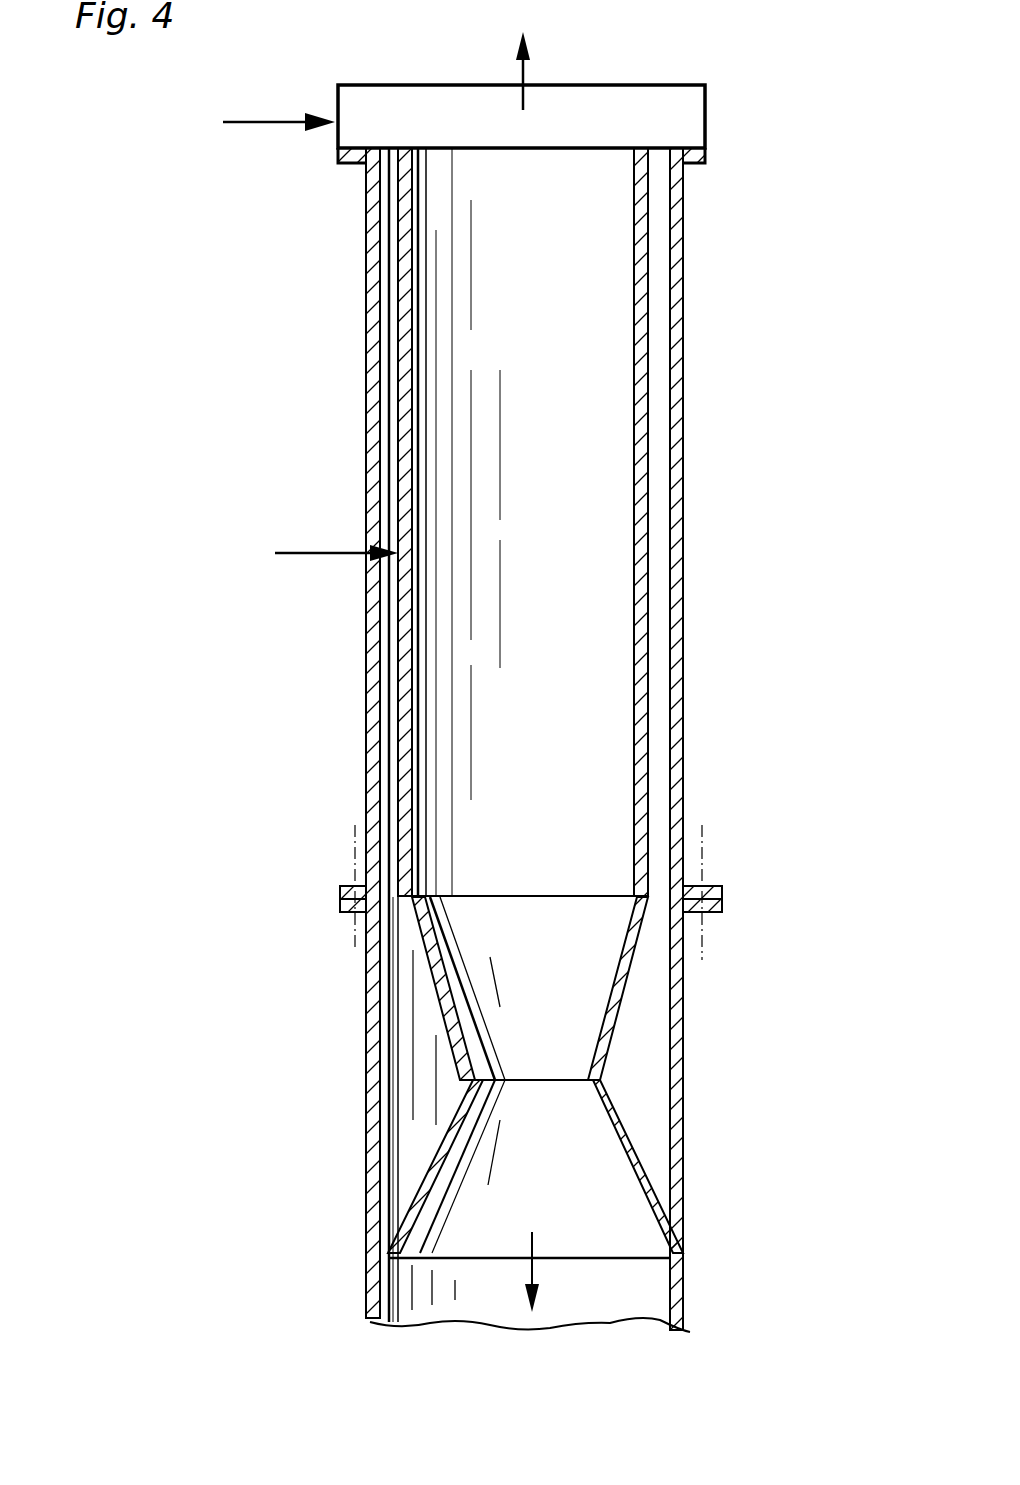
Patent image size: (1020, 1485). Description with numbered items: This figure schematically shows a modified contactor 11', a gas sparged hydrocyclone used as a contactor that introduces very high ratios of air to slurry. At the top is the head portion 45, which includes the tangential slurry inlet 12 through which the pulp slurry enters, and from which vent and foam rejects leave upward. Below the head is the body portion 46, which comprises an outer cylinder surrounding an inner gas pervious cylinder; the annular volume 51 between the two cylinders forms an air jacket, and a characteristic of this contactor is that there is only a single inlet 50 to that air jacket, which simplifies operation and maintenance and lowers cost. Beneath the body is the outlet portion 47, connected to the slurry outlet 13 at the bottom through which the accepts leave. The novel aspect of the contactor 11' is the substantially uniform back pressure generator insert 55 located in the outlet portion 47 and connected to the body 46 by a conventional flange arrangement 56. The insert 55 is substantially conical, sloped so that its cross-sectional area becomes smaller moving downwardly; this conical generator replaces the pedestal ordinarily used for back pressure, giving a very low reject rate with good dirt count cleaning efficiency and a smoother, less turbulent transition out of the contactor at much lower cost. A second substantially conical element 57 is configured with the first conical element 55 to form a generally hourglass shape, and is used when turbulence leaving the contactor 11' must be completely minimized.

The modified contactor 11' is at (434, 740).
The tangential slurry inlet 12 is at (265, 124).
The slurry outlet 13 is at (385, 1275).
The head portion 45 is at (713, 85).
The body portion 46 is at (722, 170).
The outlet portion 47 is at (728, 908).
The inlet to the air jacket 50 is at (306, 553).
The annular volume 51 is at (396, 403).
The back pressure generator insert 55 is at (440, 970).
The flange arrangement 56 is at (352, 886).
The second substantially conical element 57 is at (435, 1142).